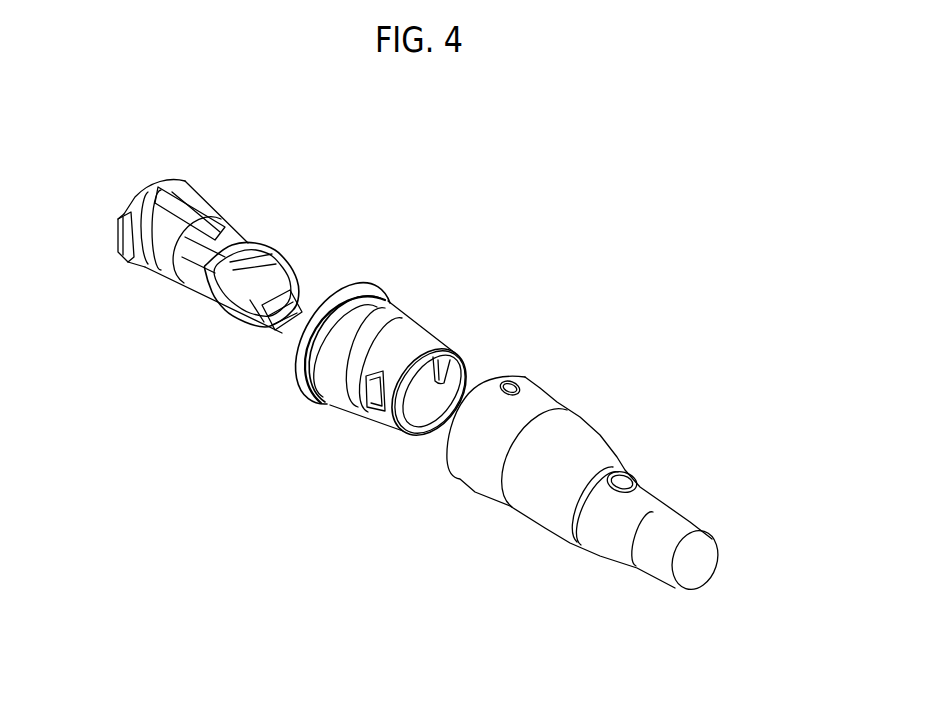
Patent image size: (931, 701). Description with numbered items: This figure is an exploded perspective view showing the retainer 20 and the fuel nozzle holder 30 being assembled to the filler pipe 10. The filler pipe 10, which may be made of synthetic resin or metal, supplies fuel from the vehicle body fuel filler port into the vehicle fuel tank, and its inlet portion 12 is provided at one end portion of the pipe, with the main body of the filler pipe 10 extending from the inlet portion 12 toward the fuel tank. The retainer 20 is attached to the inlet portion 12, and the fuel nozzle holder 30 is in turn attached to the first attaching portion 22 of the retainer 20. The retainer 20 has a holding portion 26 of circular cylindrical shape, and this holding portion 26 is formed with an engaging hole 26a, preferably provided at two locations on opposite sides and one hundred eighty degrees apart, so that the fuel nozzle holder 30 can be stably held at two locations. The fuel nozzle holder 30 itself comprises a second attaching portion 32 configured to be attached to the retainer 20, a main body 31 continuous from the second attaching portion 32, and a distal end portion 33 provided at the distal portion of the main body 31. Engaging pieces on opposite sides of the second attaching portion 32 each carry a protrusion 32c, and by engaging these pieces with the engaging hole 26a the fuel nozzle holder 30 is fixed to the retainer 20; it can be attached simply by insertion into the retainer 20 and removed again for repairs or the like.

The filler pipe 10 is at (622, 427).
The inlet portion 12 is at (540, 397).
The retainer 20 is at (428, 309).
The first attaching portion 22 is at (373, 317).
The holding portion 26 is at (423, 342).
The engaging hole 26a is at (368, 398).
The fuel nozzle holder 30 is at (262, 224).
The main body 31 is at (190, 272).
The second attaching portion 32 is at (175, 179).
The protrusion 32c is at (121, 258).
The distal end portion 33 is at (289, 278).